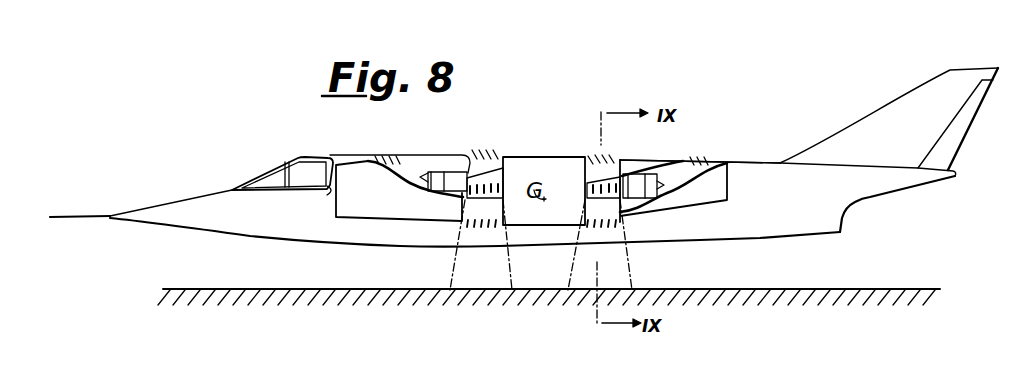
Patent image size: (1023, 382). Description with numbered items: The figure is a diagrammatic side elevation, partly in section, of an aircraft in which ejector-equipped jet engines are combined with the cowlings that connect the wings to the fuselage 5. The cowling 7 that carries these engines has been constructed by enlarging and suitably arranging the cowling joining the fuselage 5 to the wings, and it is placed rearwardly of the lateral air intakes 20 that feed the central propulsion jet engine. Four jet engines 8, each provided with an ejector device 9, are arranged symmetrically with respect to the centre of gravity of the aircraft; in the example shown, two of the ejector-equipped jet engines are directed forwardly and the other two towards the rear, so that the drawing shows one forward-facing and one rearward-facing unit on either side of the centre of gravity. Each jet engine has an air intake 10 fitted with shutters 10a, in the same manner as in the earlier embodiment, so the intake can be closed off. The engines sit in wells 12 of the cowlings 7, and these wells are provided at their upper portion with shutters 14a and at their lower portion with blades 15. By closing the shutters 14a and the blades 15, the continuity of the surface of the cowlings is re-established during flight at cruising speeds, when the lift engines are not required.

The fuselage 5 is at (697, 228).
The cowling 7 is at (373, 202).
The jet engine 8 is at (437, 174).
The ejector device 9 is at (478, 178).
The air intake 10 is at (405, 170).
The shutter 10a is at (384, 157).
The well 12 is at (608, 210).
The shutter 14a is at (594, 157).
The blade 15 is at (483, 227).
The lateral air intake 20 is at (331, 204).